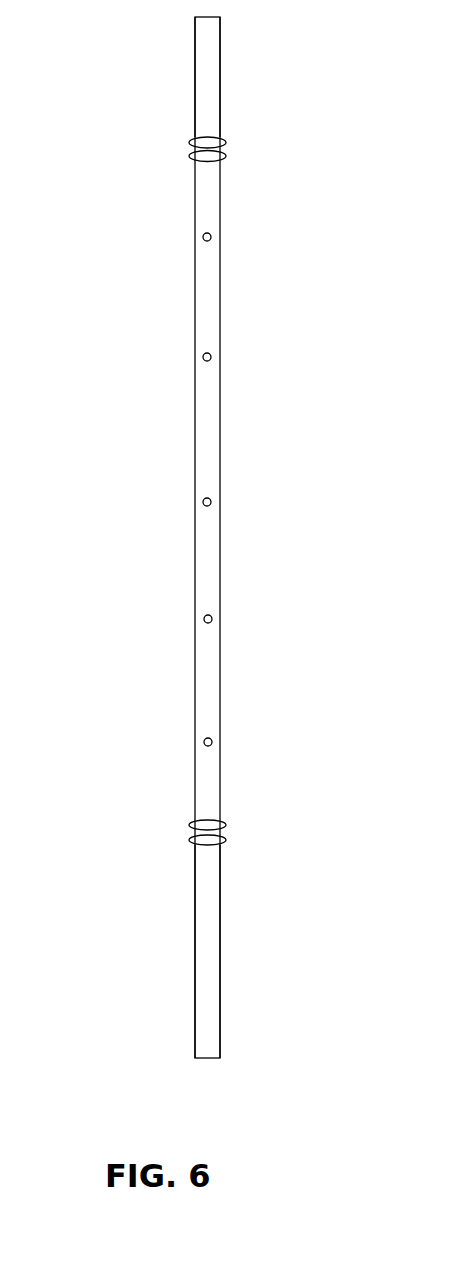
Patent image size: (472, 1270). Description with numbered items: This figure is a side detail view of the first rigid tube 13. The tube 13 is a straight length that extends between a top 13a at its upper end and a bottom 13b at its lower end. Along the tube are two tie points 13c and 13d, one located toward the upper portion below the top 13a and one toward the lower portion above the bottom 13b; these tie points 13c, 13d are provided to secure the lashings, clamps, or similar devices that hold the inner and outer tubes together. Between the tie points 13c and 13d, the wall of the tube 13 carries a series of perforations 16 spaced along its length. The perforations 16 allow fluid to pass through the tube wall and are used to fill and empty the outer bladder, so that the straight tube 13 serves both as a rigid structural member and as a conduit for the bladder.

The first rigid tube 13 is at (192, 685).
The top 13a is at (218, 85).
The bottom 13b is at (220, 935).
The tie point 13c is at (224, 153).
The tie point 13d is at (227, 837).
The perforations 16 is at (200, 500).